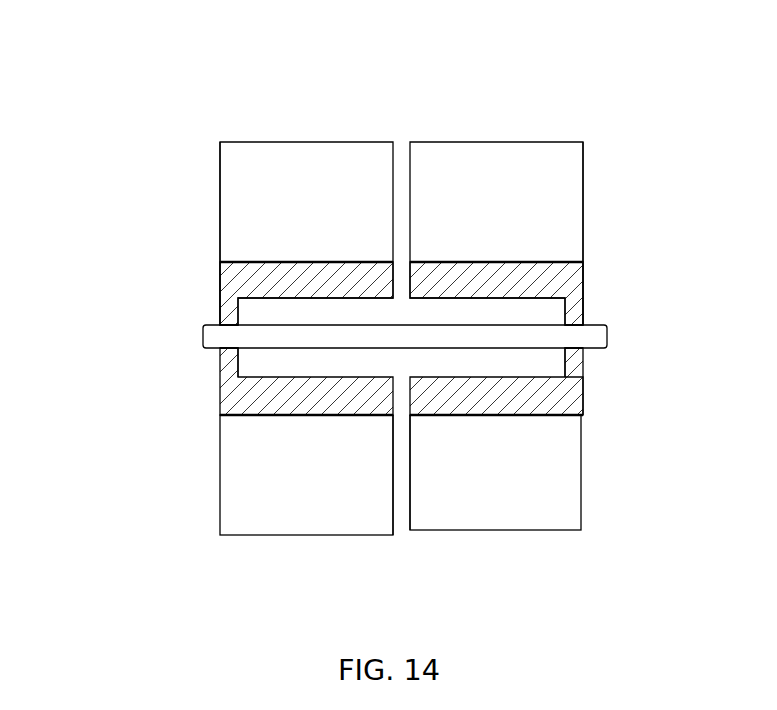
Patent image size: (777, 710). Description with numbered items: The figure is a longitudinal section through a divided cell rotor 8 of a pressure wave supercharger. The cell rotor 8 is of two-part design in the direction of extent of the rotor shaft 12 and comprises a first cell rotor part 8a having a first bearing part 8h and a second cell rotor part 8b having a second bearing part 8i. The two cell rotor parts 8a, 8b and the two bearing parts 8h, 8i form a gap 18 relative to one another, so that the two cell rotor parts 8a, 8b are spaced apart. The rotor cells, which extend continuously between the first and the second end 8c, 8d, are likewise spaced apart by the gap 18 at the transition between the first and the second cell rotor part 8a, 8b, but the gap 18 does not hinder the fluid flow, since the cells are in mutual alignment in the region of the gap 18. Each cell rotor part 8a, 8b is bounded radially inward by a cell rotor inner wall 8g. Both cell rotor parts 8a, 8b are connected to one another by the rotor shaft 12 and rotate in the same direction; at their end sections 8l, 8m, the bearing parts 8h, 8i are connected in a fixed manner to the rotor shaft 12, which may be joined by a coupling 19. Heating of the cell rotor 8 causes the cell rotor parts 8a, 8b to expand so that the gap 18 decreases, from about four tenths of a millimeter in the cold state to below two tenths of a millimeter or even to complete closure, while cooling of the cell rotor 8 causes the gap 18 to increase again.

The cell rotor 8 is at (634, 65).
The first cell rotor part 8a is at (313, 157).
The second cell rotor part 8b is at (497, 157).
The first end 8c is at (219, 203).
The second end 8d is at (584, 191).
The cell rotor inner wall 8g is at (360, 475).
The first bearing part 8h is at (248, 400).
The second bearing part 8i is at (538, 407).
The end section 8l is at (221, 360).
The end section 8m is at (583, 357).
The rotor shaft 12 is at (606, 333).
The gap 18 is at (358, 488).
The coupling 19 is at (540, 410).